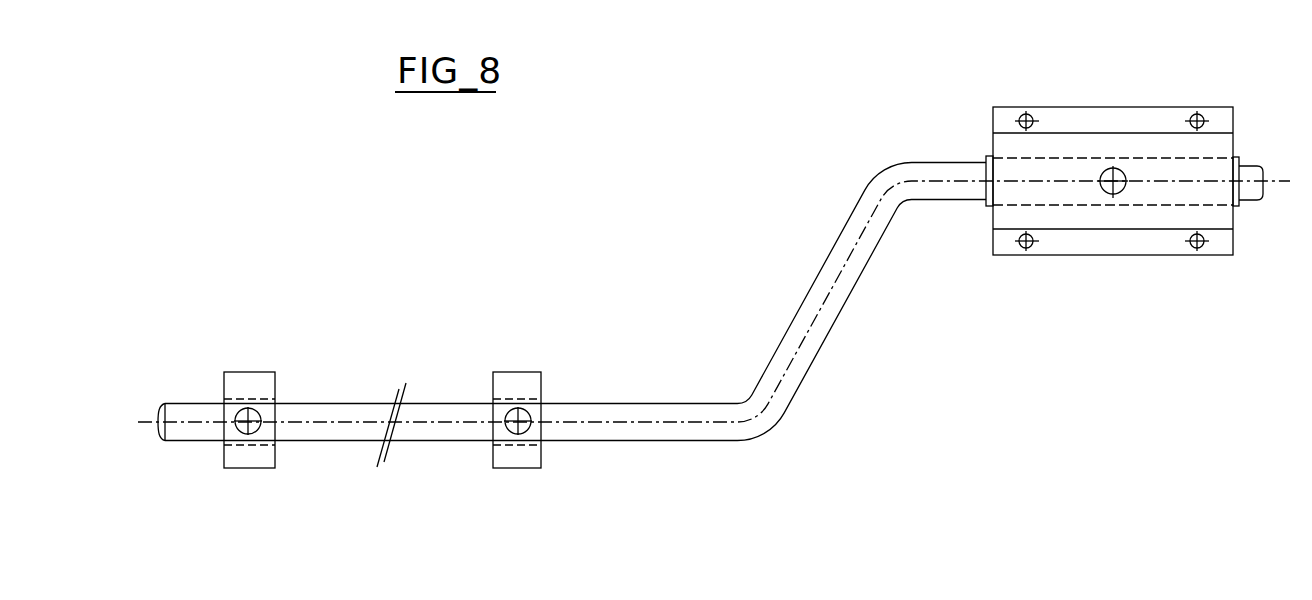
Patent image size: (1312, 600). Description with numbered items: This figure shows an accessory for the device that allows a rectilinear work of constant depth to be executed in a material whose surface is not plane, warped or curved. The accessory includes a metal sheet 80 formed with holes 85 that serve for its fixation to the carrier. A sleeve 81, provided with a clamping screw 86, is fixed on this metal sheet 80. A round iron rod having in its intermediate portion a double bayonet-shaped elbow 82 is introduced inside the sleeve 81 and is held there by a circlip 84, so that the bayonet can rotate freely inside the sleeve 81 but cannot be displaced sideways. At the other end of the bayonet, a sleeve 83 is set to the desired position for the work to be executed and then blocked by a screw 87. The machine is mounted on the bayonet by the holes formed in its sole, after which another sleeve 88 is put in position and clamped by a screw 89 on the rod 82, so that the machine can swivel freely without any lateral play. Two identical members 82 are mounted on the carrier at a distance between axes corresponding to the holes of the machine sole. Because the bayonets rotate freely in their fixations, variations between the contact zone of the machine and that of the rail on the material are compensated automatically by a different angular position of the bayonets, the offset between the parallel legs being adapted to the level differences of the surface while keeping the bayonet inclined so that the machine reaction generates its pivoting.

The metal sheet 80 is at (993, 108).
The sleeve 81 is at (1062, 132).
The double bayonet-shaped elbow rod 82 is at (700, 423).
The sleeve 83 is at (515, 469).
The circlip 84 is at (986, 165).
The holes 85 is at (1024, 116).
The clamping screw 86 is at (1113, 176).
The screw 87 is at (517, 417).
The sleeve 88 is at (247, 469).
The screw 89 is at (247, 417).